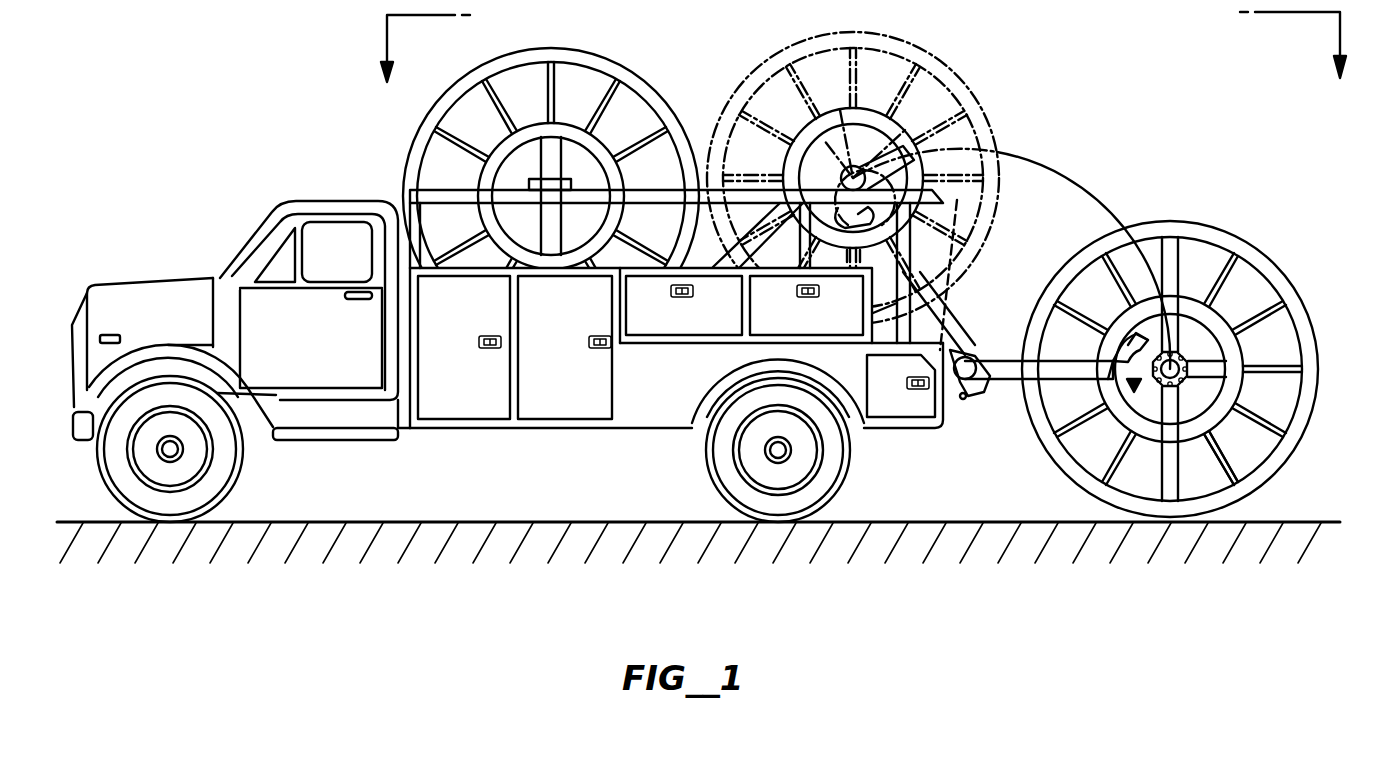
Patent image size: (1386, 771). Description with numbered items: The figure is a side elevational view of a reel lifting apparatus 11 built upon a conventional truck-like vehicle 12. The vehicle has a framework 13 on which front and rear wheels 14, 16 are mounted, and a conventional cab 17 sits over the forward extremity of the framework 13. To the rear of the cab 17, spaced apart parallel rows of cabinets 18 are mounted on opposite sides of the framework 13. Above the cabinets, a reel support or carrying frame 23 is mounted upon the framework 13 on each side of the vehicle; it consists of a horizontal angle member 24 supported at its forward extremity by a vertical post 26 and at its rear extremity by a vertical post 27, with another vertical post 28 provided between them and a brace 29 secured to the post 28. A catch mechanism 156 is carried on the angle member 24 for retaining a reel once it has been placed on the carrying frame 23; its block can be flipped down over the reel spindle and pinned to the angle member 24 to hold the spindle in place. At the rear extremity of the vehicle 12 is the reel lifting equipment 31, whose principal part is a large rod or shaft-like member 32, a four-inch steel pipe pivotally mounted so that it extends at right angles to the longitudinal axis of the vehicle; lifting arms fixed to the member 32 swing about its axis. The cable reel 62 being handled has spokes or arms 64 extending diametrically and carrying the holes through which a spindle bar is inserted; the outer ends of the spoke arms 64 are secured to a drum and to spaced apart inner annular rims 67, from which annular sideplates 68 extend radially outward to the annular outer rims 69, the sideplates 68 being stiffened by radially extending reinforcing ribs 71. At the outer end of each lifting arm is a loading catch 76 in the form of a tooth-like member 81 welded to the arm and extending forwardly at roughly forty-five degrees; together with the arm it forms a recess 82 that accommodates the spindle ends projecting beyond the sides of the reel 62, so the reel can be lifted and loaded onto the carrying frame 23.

The reel lifting apparatus 11 is at (214, 48).
The truck-like vehicle 12 is at (188, 272).
The framework 13 is at (100, 440).
The front wheels 14 is at (228, 478).
The rear wheels 16 is at (717, 479).
The cab 17 is at (333, 200).
The cabinets 18 is at (563, 424).
The reel support or carrying frame 23 is at (670, 192).
The horizontal angle member 24 is at (465, 192).
The vertical post 26 is at (421, 234).
The vertical post 27 is at (905, 266).
The vertical post 28 is at (808, 256).
The brace 29 is at (778, 230).
The reel lifting equipment 31 is at (976, 356).
The rod or shaft-like member 32 is at (970, 386).
The cable reel 62 is at (649, 88).
The spokes or arms 64 is at (1202, 371).
The inner annular rims 67 is at (1235, 388).
The annular sideplates 68 is at (1266, 442).
The annular outer rims 69 is at (1070, 470).
The reinforcing ribs 71 is at (1240, 462).
The loading catch 76 is at (1134, 384).
The tooth-like member 81 is at (1114, 350).
The recess 82 is at (1130, 340).
The catch mechanism 156 is at (562, 182).